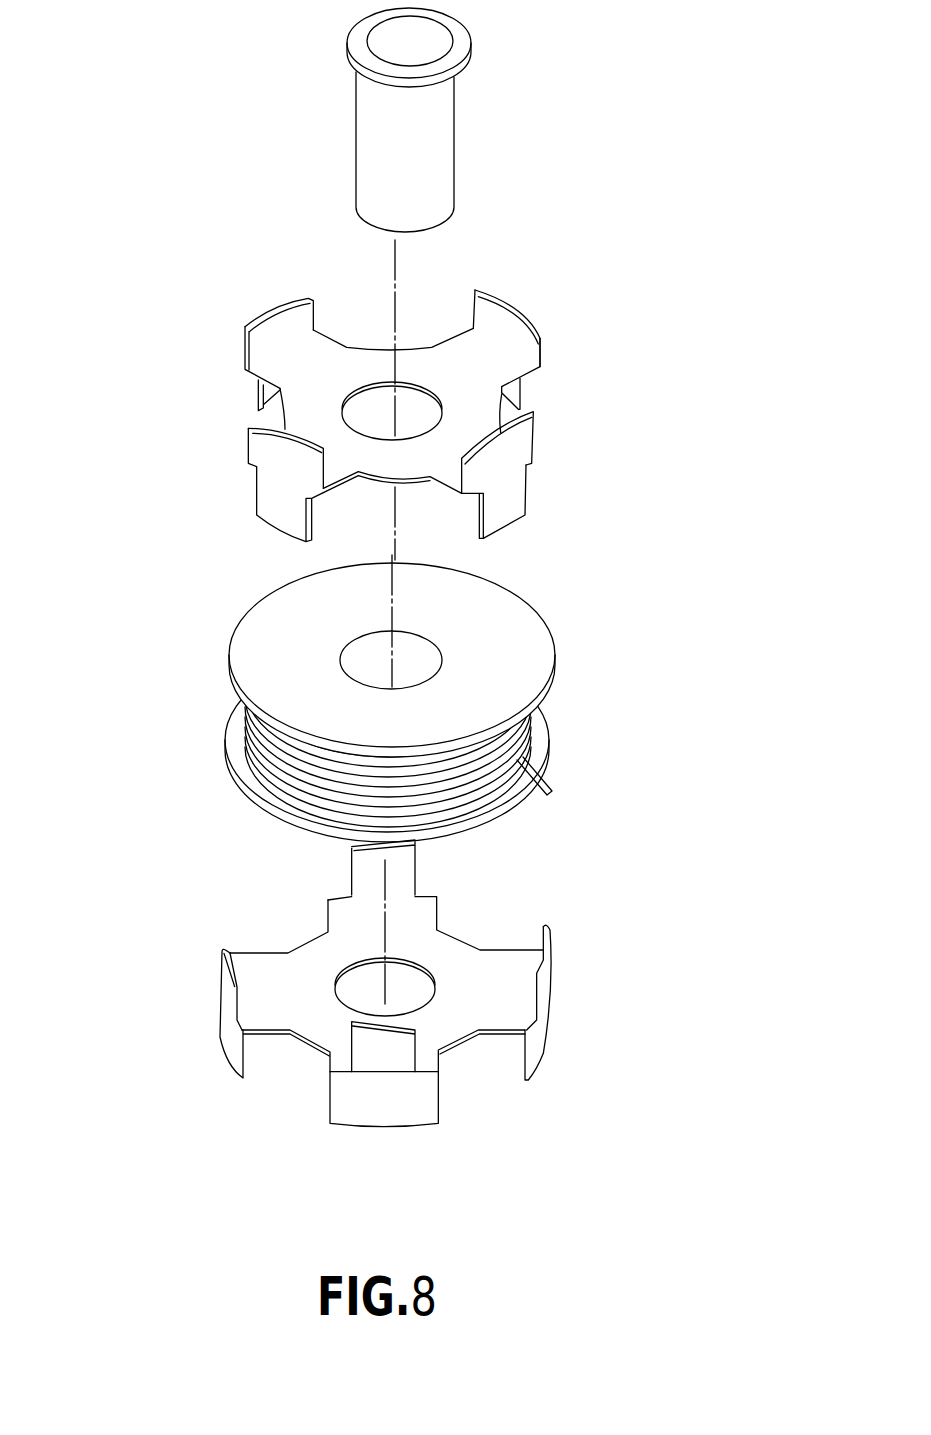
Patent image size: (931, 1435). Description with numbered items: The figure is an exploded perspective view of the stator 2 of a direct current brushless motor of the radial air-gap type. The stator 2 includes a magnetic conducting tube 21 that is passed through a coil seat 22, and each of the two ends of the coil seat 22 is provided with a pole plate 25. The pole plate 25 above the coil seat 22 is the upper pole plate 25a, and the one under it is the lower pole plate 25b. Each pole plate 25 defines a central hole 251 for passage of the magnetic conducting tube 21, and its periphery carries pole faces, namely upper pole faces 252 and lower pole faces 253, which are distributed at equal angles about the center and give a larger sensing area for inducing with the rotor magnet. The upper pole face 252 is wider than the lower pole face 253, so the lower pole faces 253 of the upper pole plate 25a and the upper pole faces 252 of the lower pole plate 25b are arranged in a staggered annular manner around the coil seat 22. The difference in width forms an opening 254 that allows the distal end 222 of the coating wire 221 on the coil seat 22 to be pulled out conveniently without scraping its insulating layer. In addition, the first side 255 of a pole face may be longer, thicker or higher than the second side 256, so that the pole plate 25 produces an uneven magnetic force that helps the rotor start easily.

The stator 2 is at (136, 239).
The magnetic conducting tube 21 is at (363, 143).
The coil seat 22 is at (533, 643).
The coating wire 221 is at (532, 727).
The distal end 222 is at (550, 780).
The pole plate 25 is at (257, 298).
The upper pole plate 25a is at (290, 372).
The lower pole plate 25b is at (455, 953).
The central hole 251 is at (370, 402).
The upper pole face 252 is at (525, 315).
The lower pole face 253 is at (528, 392).
The opening 254 is at (470, 520).
The first side 255 is at (468, 307).
The second side 256 is at (542, 357).